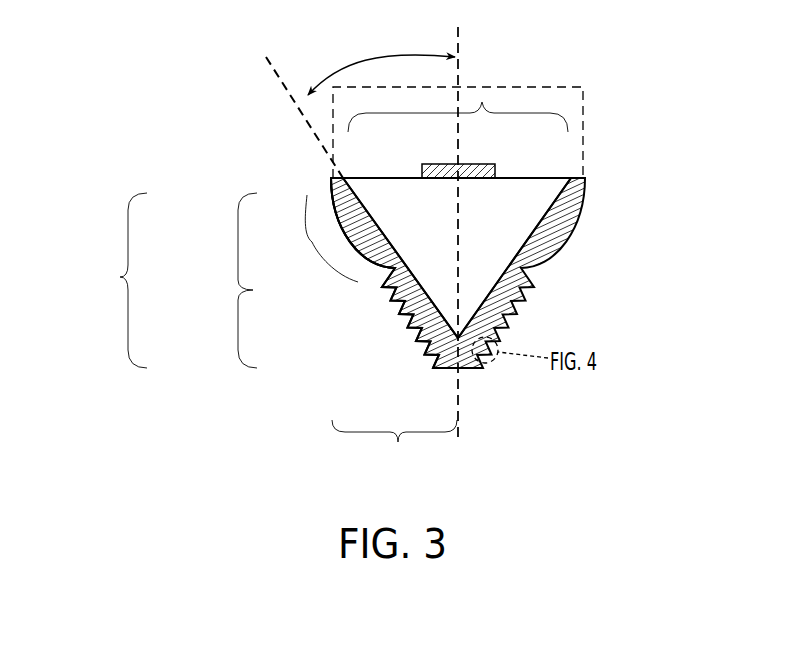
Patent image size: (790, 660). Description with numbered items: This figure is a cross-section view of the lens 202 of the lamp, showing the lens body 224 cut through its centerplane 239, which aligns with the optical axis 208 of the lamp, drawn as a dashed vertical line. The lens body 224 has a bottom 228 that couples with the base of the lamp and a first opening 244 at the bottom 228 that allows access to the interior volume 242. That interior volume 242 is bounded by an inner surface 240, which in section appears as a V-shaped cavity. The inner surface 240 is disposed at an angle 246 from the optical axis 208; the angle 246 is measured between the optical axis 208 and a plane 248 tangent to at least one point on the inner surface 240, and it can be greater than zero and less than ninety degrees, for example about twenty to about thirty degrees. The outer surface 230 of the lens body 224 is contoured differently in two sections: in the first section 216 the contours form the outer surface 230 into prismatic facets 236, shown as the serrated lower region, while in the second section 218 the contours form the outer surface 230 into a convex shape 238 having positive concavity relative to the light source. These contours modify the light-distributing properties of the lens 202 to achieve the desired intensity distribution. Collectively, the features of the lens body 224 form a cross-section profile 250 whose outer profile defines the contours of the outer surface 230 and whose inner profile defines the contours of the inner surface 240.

The lens 202 is at (640, 186).
The optical axis 208 is at (463, 42).
The centerplane 239 is at (463, 42).
The first section 216 is at (230, 327).
The second section 218 is at (230, 243).
The lens body 224 is at (120, 277).
The bottom 228 is at (596, 182).
The outer surface 230 is at (372, 270).
The prismatic facets 236 is at (427, 351).
The convex shape 238 is at (312, 242).
The inner surface 240 is at (378, 202).
The interior volume 242 is at (522, 205).
The first opening 244 is at (483, 102).
The angle 246 is at (374, 56).
The plane 248 is at (280, 72).
The cross-section profile 250 is at (400, 443).